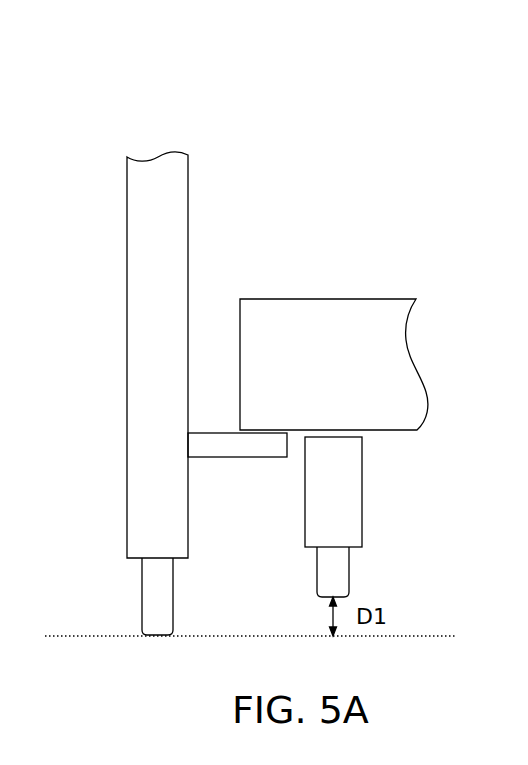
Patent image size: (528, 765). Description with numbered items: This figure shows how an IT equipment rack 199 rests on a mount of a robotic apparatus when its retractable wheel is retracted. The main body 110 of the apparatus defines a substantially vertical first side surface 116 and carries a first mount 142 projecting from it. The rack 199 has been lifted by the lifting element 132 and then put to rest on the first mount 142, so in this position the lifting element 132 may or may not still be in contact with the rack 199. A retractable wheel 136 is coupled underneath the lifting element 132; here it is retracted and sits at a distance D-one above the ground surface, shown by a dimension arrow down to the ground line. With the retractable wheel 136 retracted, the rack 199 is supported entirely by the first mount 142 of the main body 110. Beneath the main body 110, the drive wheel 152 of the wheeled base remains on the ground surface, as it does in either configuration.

The main body 110 is at (126, 94).
The first side surface 116 is at (118, 252).
The first mount 142 is at (214, 472).
The IT equipment rack 199 is at (345, 280).
The lifting element 132 is at (377, 480).
The retractable wheel 136 is at (367, 565).
The drive wheel 152 is at (126, 598).